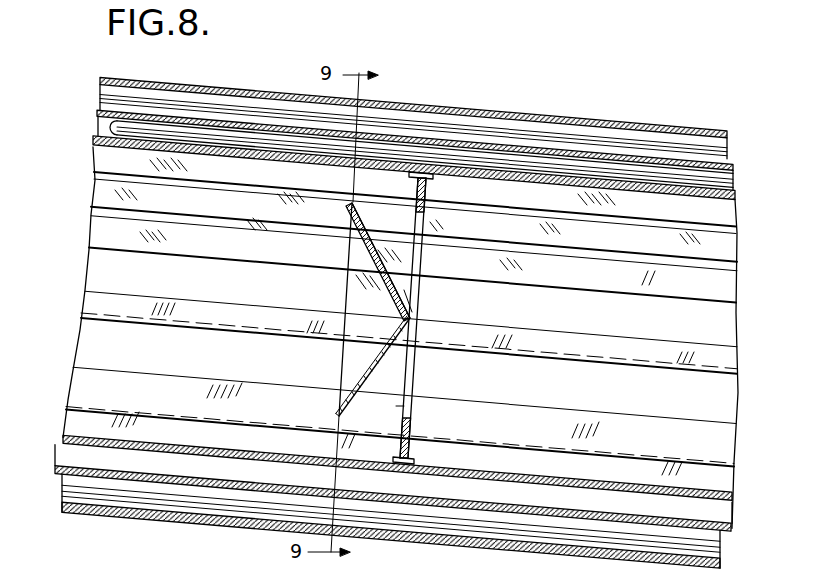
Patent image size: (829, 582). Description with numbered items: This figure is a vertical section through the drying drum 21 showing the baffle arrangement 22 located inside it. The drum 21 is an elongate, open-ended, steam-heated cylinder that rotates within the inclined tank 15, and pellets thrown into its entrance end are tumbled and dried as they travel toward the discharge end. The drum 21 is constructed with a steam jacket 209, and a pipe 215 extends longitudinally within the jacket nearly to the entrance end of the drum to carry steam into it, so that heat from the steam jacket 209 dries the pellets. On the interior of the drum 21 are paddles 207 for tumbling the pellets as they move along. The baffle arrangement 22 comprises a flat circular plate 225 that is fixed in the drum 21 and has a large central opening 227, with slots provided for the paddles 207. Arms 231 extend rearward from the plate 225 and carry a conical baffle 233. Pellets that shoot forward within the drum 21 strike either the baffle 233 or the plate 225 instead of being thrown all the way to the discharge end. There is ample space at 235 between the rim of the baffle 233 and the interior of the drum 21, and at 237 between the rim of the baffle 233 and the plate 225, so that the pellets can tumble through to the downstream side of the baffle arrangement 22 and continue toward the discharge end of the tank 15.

The tank 15 is at (210, 80).
The steam jacket 209 is at (712, 163).
The pipe 215 is at (122, 121).
The paddles 207 is at (240, 204).
The drying drum 21 is at (166, 450).
The baffle arrangement 22 is at (352, 250).
The arms 231 is at (371, 202).
The conical baffle 233 is at (404, 290).
The central opening 227 is at (410, 421).
The flat circular plate 225 is at (409, 452).
The space between baffle rim and plate 237 is at (394, 412).
The space between baffle rim and drum interior 235 is at (344, 436).